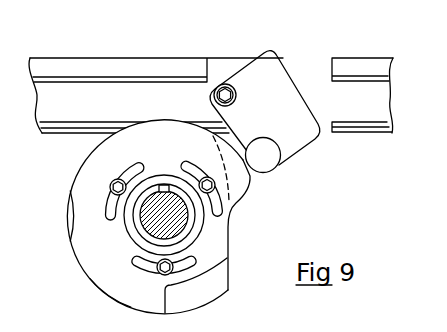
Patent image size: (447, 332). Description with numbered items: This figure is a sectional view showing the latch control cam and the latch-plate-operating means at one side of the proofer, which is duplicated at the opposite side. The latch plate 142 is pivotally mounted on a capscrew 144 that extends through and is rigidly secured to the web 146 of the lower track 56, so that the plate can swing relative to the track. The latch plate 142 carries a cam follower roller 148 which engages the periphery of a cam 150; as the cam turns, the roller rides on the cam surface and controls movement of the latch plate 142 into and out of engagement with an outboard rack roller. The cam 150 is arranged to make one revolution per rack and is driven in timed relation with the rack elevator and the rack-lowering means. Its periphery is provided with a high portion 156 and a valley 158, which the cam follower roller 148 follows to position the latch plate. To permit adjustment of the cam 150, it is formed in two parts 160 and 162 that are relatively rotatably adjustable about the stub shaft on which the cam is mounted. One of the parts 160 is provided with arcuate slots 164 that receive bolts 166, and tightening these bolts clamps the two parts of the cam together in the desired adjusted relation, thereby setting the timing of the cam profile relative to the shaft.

The lower track 56 is at (360, 57).
The latch plate 142 is at (318, 140).
The capscrew 144 is at (226, 84).
The web 146 is at (360, 97).
The cam follower roller 148 is at (282, 160).
The cam 150 is at (68, 182).
The high portion 156 is at (67, 208).
The valley 158 is at (229, 227).
The cam part 160 is at (128, 295).
The cam part 162 is at (208, 291).
The arcuate slots 164 is at (129, 253).
The bolts 166 is at (121, 176).